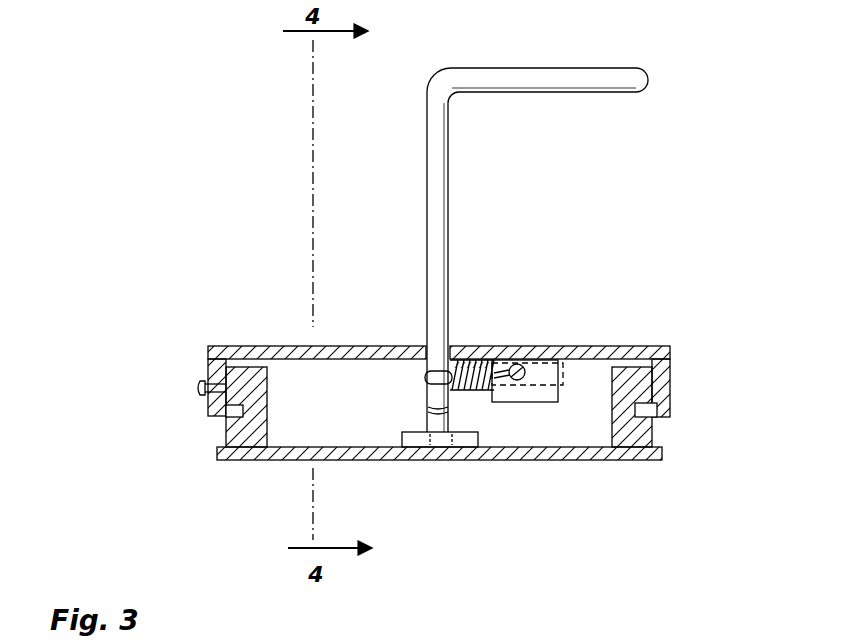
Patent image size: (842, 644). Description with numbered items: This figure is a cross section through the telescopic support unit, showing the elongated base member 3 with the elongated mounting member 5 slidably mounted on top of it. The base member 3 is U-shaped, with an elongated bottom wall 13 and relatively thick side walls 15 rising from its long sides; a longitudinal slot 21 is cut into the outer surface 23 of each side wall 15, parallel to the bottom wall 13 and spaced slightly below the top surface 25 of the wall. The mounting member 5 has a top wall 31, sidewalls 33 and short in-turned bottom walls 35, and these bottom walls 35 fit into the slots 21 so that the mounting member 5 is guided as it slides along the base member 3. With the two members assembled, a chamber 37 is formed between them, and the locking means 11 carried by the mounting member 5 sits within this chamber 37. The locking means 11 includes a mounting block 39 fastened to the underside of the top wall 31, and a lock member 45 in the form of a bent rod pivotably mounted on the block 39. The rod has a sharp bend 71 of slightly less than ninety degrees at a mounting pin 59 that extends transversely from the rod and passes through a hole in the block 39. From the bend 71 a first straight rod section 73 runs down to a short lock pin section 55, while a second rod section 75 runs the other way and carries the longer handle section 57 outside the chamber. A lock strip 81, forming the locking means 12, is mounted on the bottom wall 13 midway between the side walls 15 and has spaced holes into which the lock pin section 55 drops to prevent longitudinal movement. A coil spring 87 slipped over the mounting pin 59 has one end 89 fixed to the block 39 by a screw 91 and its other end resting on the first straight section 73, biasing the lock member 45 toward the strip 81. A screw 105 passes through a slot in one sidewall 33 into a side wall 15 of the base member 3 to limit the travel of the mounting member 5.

The base member 3 is at (242, 470).
The mounting member 5 is at (436, 398).
The locking means 11 is at (536, 250).
The locking means 12 is at (484, 438).
The bottom wall 13 is at (465, 448).
The side walls 15 is at (226, 437).
The longitudinal slot 21 is at (265, 420).
The outer surface 23 is at (227, 430).
The top surface 25 is at (238, 362).
The top wall 31 is at (277, 345).
The sidewalls 33 is at (208, 362).
The in-turned bottom walls 35 is at (658, 416).
The chamber 37 is at (297, 383).
The mounting block 39 is at (545, 401).
The lock member 45 is at (426, 226).
The lock pin section 55 is at (435, 425).
The handle section 57 is at (627, 78).
The mounting pin 59 is at (565, 368).
The bend 71 is at (432, 373).
The first straight rod section 73 is at (427, 393).
The second rod section 75 is at (427, 139).
The lock strip 81 is at (402, 438).
The coil spring 87 is at (470, 349).
The spring end 89 is at (501, 370).
The screw 91 is at (524, 366).
The screw 105 is at (198, 388).